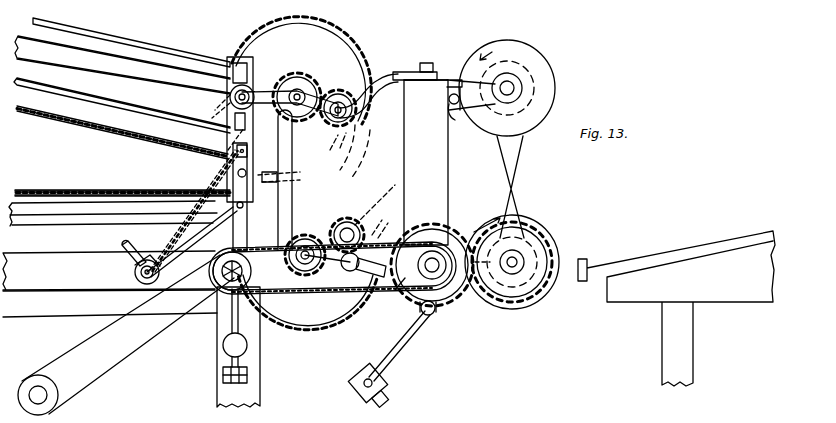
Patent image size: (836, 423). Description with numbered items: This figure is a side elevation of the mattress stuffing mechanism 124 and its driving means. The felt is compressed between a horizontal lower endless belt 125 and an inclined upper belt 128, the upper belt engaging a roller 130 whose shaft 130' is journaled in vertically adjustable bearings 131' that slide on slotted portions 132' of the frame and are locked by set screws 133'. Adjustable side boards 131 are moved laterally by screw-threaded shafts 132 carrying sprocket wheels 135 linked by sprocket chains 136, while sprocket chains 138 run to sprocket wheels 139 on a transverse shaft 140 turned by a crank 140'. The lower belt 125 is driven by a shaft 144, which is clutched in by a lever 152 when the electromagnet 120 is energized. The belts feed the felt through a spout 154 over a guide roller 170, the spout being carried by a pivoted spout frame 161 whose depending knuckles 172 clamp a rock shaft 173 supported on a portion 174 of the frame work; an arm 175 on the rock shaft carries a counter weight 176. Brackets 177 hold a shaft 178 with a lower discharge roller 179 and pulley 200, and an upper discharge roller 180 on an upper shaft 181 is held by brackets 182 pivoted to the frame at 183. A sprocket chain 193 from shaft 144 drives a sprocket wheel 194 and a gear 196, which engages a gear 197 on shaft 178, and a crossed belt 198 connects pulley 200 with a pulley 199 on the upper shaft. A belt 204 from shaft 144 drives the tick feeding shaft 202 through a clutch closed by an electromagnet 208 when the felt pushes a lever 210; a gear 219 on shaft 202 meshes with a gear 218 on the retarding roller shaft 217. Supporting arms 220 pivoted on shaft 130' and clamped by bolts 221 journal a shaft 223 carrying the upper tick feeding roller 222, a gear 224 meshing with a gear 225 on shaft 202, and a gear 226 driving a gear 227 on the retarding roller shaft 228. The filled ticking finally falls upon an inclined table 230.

The electromagnet 120 is at (225, 350).
The stuffing mechanism 124 is at (425, 48).
The lower endless belt 125 is at (77, 317).
The inclined belt 128 is at (129, 39).
The roller 130 is at (213, 154).
The shaft 130' is at (211, 129).
The side boards 131 is at (122, 178).
The vertically adjustable bearings 131' is at (217, 155).
The shaft 132 is at (123, 110).
The slotted portions of the frame 132' is at (122, 129).
The set screws 133' is at (225, 166).
The sprocket wheels 135 is at (278, 182).
The sprocket chains 136 is at (123, 120).
The sprocket chains 138 is at (190, 196).
The sprocket wheels 139 is at (137, 268).
The transverse shaft 140 is at (118, 273).
The crank 140' is at (103, 251).
The shaft 144 is at (192, 280).
The lever 152 is at (232, 326).
The spout 154 is at (365, 147).
The spout carrying frame 161 is at (426, 162).
The guide roller 170 is at (292, 151).
The depending knuckles 172 is at (437, 305).
The rock shaft 173 is at (433, 316).
The portion of the frame work 174 is at (396, 291).
The crank or arm 175 is at (400, 354).
The counter weight 176 is at (386, 383).
The brackets 177 is at (487, 285).
The shaft 178 is at (526, 258).
The discharge roller 179 is at (526, 308).
The upper discharge roller 180 is at (556, 93).
The upper shaft 181 is at (524, 87).
The brackets 182 is at (447, 85).
The pivot of brackets 183 is at (452, 106).
The sprocket chain 193 is at (392, 242).
The sprocket wheel 194 is at (420, 290).
The gear 196 is at (448, 246).
The gear 197 is at (533, 300).
The crossed belt 198 is at (517, 180).
The pulley 199 is at (532, 108).
The pulley 200 is at (546, 226).
The transverse shaft 202 is at (345, 269).
The belt 204 is at (332, 278).
The electromagnet 208 is at (355, 232).
The lever 210 is at (300, 178).
The shaft 217 is at (365, 212).
The gear 218 is at (314, 237).
The gear 219 is at (295, 235).
The supporting arms 220 is at (393, 72).
The bolts 221 is at (432, 64).
The upper tick feeding roller 222 is at (305, 120).
The shaft 223 is at (305, 91).
The gear 224 is at (338, 40).
The gear 225 is at (300, 328).
The gear 226 is at (300, 77).
The gear 227 is at (347, 102).
The shaft 228 is at (352, 128).
The inclined table 230 is at (675, 256).